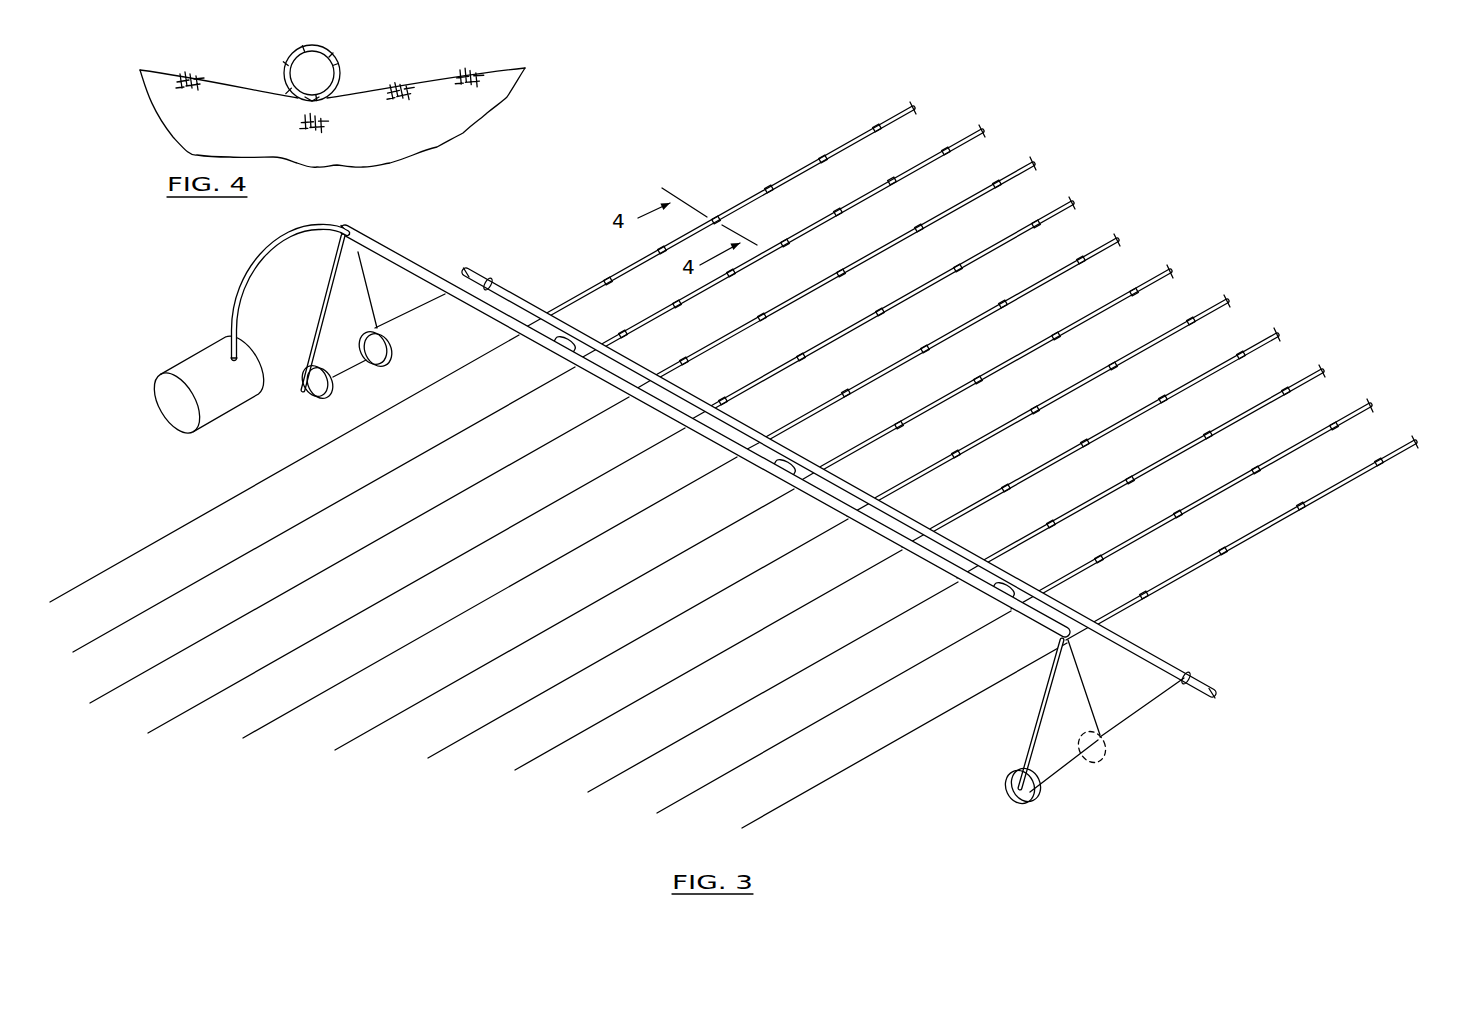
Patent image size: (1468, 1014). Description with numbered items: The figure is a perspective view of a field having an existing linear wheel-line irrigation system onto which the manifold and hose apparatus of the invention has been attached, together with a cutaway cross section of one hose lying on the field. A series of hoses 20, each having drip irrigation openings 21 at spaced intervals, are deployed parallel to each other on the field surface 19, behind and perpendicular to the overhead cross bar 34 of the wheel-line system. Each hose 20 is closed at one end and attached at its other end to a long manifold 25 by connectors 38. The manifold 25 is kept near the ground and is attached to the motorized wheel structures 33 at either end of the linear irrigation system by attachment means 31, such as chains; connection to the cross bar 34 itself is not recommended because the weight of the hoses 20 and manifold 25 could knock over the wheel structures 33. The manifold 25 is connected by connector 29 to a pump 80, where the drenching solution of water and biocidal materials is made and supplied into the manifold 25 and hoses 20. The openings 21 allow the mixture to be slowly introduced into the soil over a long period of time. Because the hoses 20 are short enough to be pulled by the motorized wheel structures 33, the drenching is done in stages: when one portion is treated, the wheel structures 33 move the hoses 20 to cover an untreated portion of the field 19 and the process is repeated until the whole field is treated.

In FIG. 3, the field surface 19 is at (977, 304).
In FIG. 4, the field surface 19 is at (408, 73).
In FIG. 3, the hose 20 is at (891, 117).
In FIG. 4, the hose 20 is at (324, 48).
In FIG. 3, the drip irrigation opening 21 is at (875, 127).
In FIG. 4, the drip irrigation opening 21 is at (312, 102).
In FIG. 3, the manifold 25 is at (519, 297).
In FIG. 3, the connector 29 is at (254, 273).
In FIG. 3, the attachment means 31 is at (407, 312).
In FIG. 3, the motorized wheel structure 33 is at (342, 300).
In FIG. 3, the cross bar 34 is at (657, 413).
In FIG. 3, the connector 38 is at (768, 452).
In FIG. 3, the pump 80 is at (212, 360).